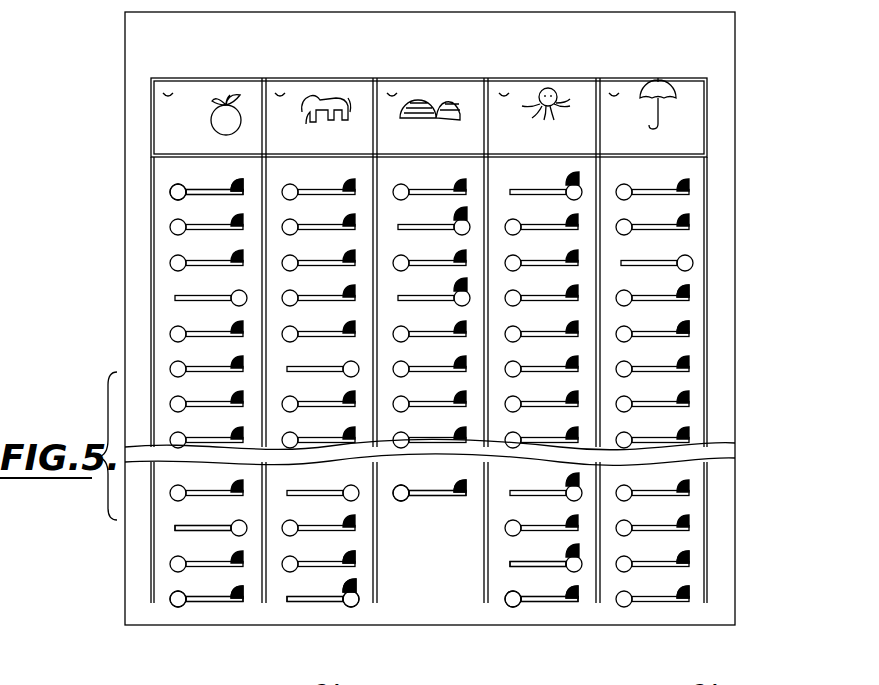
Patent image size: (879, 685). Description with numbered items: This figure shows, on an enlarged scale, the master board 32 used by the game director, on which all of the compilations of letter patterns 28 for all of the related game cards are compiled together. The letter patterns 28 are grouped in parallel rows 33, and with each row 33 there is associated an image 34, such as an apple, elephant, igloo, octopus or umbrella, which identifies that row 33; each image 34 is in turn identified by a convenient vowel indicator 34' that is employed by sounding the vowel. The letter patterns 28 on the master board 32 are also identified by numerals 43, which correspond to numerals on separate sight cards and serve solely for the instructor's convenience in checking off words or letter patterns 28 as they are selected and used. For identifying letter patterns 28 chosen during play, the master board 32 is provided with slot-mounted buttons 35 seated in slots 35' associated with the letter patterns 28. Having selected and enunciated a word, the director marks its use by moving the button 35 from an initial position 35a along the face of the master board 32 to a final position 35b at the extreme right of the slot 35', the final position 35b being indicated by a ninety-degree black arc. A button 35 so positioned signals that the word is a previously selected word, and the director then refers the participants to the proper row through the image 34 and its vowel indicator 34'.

The master board 32 is at (125, 118).
The rows 33 is at (202, 608).
The vowel indicator 34' is at (429, 99).
The image 34 is at (443, 89).
The slot-mounted buttons 35 is at (385, 395).
The slots 35' is at (331, 410).
The initial position 35a is at (172, 528).
The final position 35b is at (686, 337).
The numerals 43 is at (165, 388).
The letter patterns 28 is at (235, 352).